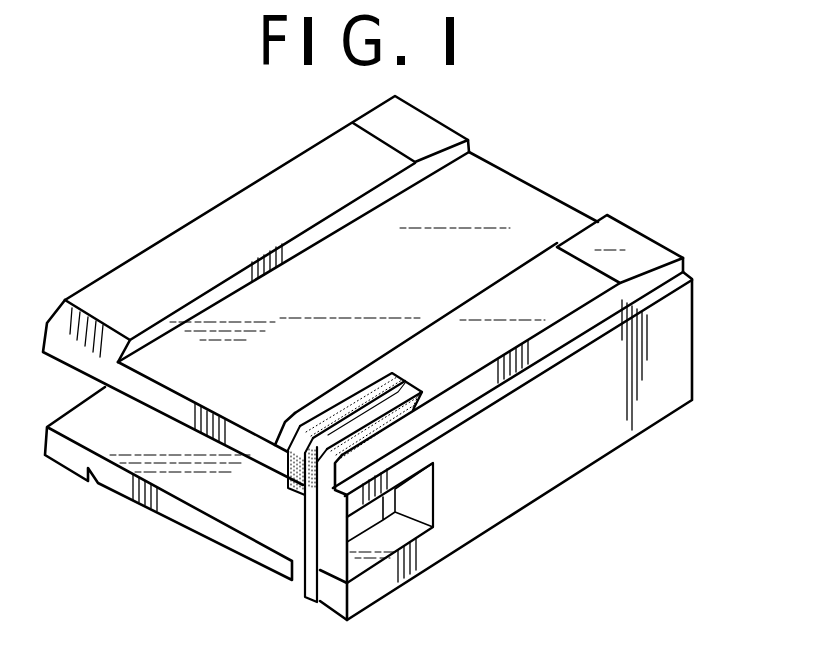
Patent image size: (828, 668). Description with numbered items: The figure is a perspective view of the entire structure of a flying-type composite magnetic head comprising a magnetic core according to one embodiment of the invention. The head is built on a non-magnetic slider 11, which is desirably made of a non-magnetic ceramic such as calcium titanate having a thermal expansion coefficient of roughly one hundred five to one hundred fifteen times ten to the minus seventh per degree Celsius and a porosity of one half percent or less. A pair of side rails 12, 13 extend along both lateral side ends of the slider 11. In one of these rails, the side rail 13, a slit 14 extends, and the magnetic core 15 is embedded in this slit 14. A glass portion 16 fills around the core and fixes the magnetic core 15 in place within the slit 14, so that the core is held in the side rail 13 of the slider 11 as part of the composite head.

The non-magnetic slider 11 is at (556, 212).
The side rail 12 is at (281, 190).
The side rail 13 is at (584, 273).
The slit 14 is at (422, 393).
The magnetic core 15 is at (307, 523).
The glass portion 16 is at (340, 402).